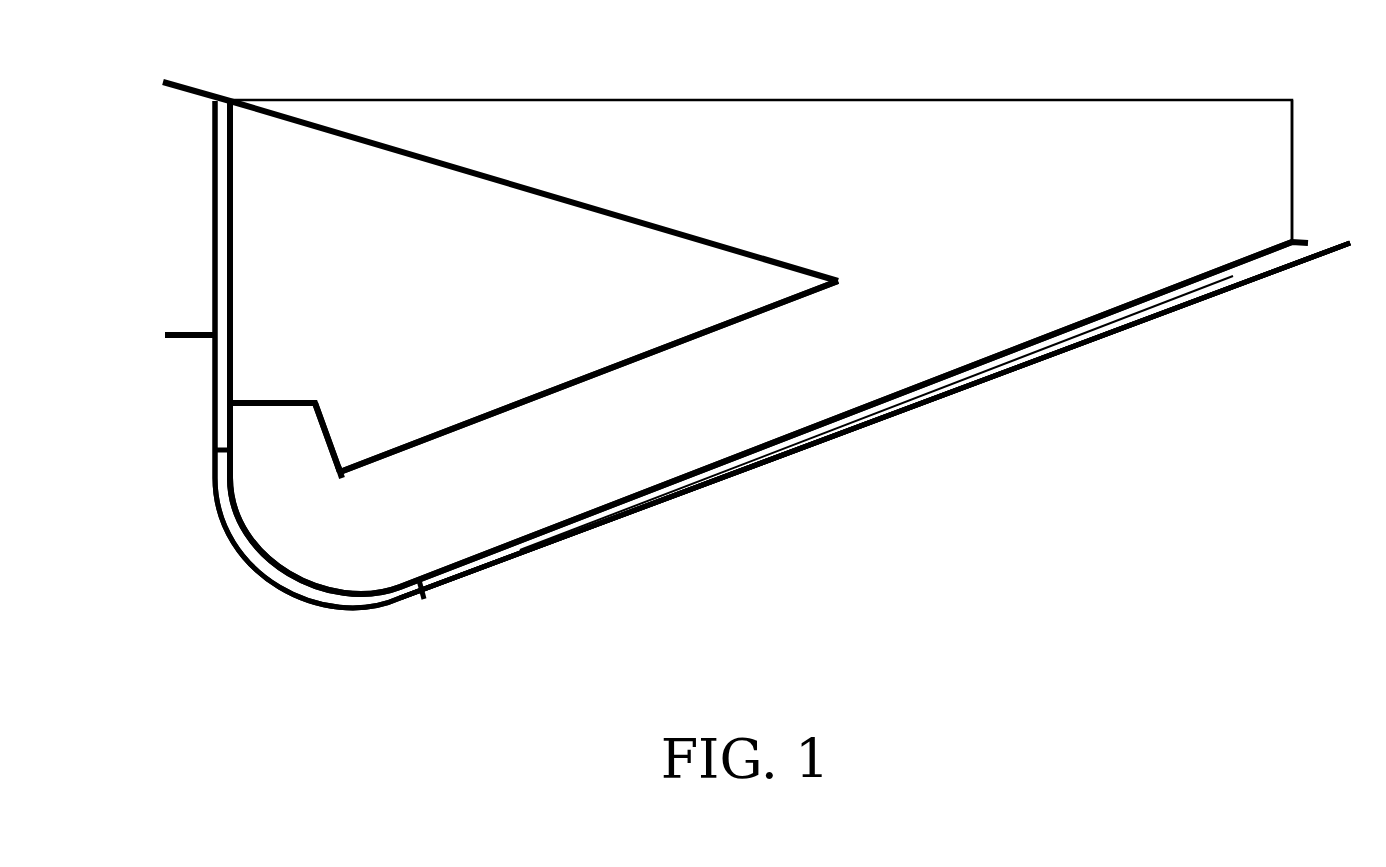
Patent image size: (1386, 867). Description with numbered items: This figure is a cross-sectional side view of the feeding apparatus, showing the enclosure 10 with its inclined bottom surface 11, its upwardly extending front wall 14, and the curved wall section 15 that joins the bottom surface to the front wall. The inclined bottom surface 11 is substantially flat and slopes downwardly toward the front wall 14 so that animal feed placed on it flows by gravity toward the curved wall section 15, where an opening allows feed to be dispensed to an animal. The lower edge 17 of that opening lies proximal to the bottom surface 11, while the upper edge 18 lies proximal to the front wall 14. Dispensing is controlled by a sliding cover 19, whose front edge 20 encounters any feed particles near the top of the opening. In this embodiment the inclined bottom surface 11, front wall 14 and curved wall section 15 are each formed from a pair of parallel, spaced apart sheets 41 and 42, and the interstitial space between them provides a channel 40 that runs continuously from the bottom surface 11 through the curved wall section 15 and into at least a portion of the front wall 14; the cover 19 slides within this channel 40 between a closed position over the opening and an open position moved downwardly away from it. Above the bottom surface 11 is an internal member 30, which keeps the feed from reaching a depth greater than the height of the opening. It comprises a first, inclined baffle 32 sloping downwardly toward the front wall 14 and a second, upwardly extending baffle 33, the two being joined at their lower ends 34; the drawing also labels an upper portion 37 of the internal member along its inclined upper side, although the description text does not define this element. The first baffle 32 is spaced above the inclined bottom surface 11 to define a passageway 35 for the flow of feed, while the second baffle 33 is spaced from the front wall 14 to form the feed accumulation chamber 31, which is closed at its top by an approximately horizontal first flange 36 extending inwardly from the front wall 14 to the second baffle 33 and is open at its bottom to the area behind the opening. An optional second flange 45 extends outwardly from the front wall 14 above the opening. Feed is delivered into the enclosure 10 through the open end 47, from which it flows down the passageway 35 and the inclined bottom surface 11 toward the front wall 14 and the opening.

The enclosure 10 is at (567, 97).
The inclined bottom surface 11 is at (895, 423).
The front wall 14 is at (207, 263).
The curved wall section 15 is at (300, 603).
The lower edge 17 is at (423, 600).
The upper edge 18 is at (215, 457).
The sliding cover 19 is at (692, 497).
The front edge 20 is at (533, 557).
The internal member 30 is at (322, 177).
The feed accumulation chamber 31 is at (280, 430).
The first baffle 32 is at (777, 307).
The second baffle 33 is at (328, 447).
The lower ends 34 is at (338, 472).
The passageway 35 is at (722, 395).
The first flange 36 is at (260, 403).
The stiffener upper flange 37 is at (408, 152).
The channel 40 is at (477, 567).
The sheet 41 is at (213, 153).
The sheet 42 is at (228, 208).
The second flange 45 is at (178, 332).
The open end 47 is at (893, 285).